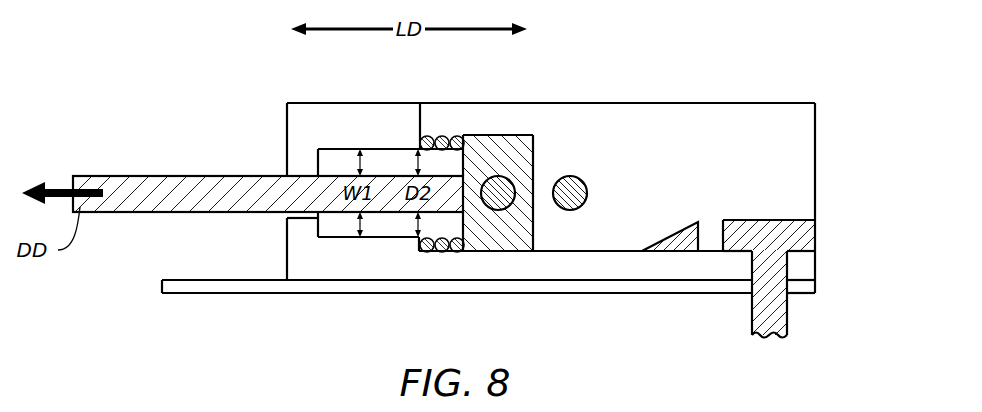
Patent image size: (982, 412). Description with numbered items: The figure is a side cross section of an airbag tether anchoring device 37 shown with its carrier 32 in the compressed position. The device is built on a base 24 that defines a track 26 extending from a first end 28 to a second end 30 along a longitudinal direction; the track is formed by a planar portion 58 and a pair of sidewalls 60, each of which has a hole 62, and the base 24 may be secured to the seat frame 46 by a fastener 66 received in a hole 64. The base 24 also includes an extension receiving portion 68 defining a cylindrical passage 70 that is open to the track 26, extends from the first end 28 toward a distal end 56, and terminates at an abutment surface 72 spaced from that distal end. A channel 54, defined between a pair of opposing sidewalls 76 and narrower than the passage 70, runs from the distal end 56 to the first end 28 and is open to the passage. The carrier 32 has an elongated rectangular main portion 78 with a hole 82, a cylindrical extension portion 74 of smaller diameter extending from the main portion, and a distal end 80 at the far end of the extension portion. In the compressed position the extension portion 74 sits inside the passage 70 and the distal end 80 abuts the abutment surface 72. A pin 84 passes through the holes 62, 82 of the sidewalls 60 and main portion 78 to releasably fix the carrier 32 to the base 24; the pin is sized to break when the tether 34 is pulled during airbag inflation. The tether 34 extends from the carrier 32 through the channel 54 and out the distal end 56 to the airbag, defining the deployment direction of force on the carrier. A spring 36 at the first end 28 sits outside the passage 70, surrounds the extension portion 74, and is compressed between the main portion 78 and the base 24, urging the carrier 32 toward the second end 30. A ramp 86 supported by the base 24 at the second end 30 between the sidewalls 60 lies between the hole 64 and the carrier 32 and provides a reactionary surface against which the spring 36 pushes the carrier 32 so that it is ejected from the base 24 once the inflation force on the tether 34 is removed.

The base 24 is at (528, 260).
The track 26 is at (575, 253).
The first end 28 is at (437, 262).
The second end 30 is at (685, 258).
The carrier 32 is at (462, 162).
The tether 34 is at (188, 190).
The spring 36 is at (440, 137).
The airbag tether anchoring device 37 is at (709, 50).
The frame 46 is at (210, 290).
The channel 54 is at (313, 117).
The distal end 56 is at (286, 128).
The planar portion 58 is at (622, 250).
The sidewalls 60 is at (757, 117).
The hole 62 is at (588, 190).
The hole 64 is at (788, 263).
The fastener 66 is at (797, 235).
The extension receiving portion 68 is at (335, 260).
The passage 70 is at (375, 148).
The abutment surface 72 is at (315, 225).
The extension portion 74 is at (468, 225).
The opposing sidewalls 76 is at (300, 162).
The main portion 78 is at (497, 140).
The distal end 80 is at (330, 148).
The hole 82 is at (500, 210).
The pin 84 is at (499, 176).
The ramp 86 is at (687, 228).